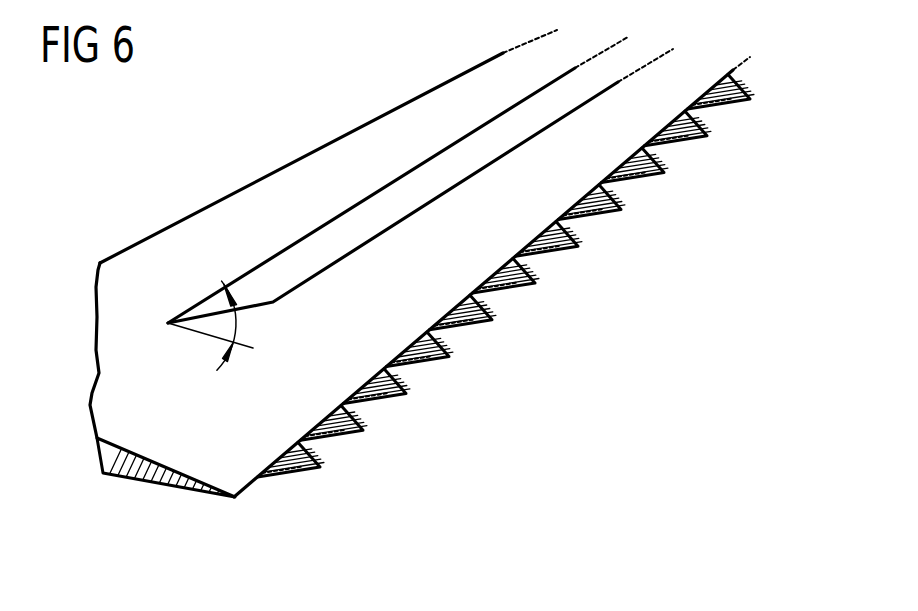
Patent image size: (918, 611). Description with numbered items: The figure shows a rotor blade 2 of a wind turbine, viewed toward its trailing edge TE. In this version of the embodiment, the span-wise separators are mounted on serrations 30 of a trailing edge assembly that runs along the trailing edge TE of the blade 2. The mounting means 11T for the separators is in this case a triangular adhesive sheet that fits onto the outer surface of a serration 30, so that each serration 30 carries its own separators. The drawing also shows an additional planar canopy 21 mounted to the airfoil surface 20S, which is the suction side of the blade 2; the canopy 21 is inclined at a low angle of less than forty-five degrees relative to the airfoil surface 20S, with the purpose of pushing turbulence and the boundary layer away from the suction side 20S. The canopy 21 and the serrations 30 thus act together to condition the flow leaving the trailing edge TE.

The rotor blade 2 is at (163, 520).
The suction side 20S is at (109, 322).
The planar canopy 21 is at (363, 220).
The serration 30 is at (380, 398).
The mounting means 11T is at (292, 472).
The trailing edge TE is at (247, 485).